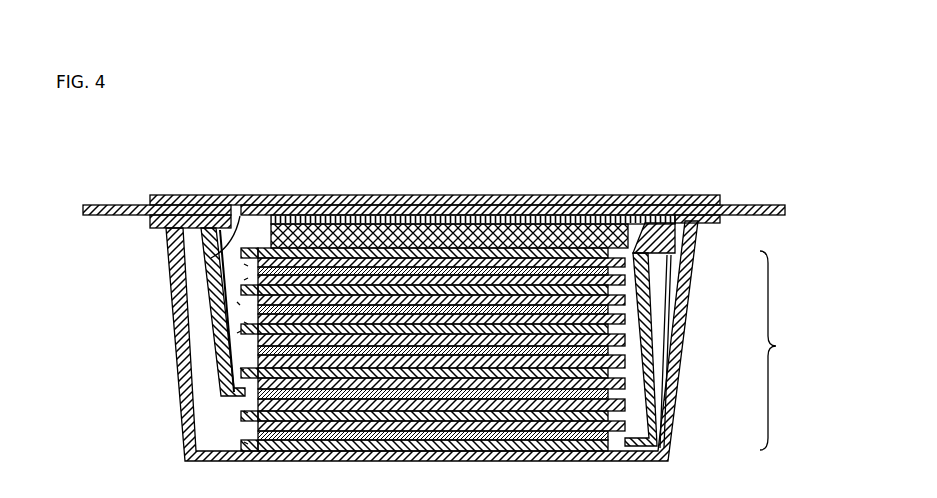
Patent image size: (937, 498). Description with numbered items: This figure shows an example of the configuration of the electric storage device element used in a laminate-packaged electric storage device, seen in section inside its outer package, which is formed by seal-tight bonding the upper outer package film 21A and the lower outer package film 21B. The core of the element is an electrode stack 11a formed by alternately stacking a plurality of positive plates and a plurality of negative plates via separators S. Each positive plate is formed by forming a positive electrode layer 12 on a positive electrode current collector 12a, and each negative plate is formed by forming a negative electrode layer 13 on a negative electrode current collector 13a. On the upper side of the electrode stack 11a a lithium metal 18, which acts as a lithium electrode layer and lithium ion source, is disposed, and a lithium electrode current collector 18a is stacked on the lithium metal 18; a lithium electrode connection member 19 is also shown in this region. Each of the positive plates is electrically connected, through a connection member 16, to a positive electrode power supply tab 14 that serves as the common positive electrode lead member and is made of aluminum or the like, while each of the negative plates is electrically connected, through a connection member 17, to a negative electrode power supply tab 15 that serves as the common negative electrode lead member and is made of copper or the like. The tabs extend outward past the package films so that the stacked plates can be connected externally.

The electrode stack 11a is at (785, 350).
The positive electrode layer 12 is at (640, 292).
The positive electrode current collector 12a is at (620, 306).
The negative electrode layer 13 is at (645, 250).
The negative electrode current collector 13a is at (240, 289).
The positive electrode power supply tab 14 is at (82, 198).
The negative electrode power supply tab 15 is at (762, 198).
The connection member 16 is at (204, 240).
The connection member 17 is at (655, 276).
The lithium metal 18 is at (395, 226).
The lithium electrode current collector 18a is at (513, 210).
The lithium electrode connection member 19 is at (641, 212).
The upper outer package film 21A is at (605, 453).
The lower outer package film 21B is at (253, 187).
The separator S is at (240, 270).